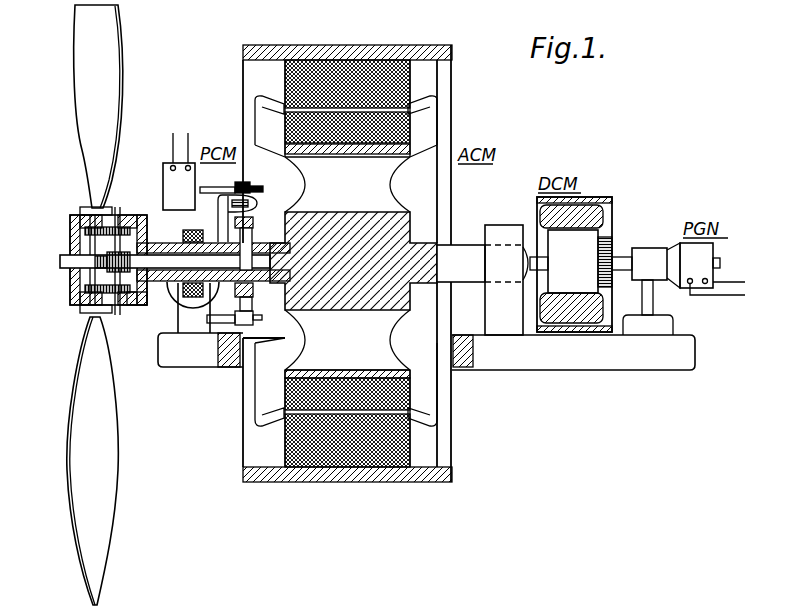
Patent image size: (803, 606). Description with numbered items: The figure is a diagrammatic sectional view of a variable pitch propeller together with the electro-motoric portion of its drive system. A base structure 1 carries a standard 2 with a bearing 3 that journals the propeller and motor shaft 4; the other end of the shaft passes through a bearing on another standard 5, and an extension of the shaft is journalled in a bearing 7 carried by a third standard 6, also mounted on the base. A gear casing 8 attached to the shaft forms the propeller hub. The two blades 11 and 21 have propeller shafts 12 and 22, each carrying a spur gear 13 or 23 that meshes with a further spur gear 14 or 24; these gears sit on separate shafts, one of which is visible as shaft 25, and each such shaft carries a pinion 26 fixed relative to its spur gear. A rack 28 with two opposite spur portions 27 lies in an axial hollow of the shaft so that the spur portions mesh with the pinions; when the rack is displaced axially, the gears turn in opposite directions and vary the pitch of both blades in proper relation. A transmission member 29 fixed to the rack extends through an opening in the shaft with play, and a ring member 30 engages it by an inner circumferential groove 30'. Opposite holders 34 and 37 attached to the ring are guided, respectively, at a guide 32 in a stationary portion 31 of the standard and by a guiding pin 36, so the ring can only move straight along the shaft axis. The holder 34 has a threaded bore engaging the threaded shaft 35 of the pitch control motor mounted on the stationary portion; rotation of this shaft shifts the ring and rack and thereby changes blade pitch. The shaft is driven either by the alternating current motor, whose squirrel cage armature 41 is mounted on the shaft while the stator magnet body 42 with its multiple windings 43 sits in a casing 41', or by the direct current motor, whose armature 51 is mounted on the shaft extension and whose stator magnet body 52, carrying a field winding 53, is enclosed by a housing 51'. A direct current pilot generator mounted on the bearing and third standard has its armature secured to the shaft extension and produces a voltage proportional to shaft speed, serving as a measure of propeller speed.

The base structure 1 is at (541, 358).
The standard 2 is at (182, 323).
The bearing 3 is at (190, 232).
The propeller and motor shaft 4 is at (457, 250).
The standard 5 is at (490, 306).
The third standard 6 is at (646, 297).
The bearing 7 is at (645, 254).
The gear casing 8 is at (155, 262).
The propeller blade 11 is at (80, 71).
The propeller shaft 12 is at (76, 222).
The spur gear 13 is at (73, 240).
The spur gear 14 is at (137, 218).
The propeller blade 21 is at (84, 402).
The propeller shaft 22 is at (80, 309).
The spur gear 23 is at (72, 290).
The spur gear 24 is at (126, 305).
The shaft 25 is at (142, 288).
The pinion 26 is at (108, 274).
The spur portions 27 is at (106, 256).
The rack 28 is at (164, 262).
The transmission member 29 is at (253, 237).
The ring member 30 is at (260, 219).
The inner circumferential groove 30' is at (261, 296).
The stationary portion 31 is at (226, 188).
The guide 32 is at (257, 204).
The holder 34 is at (244, 186).
The threaded shaft 35 is at (258, 188).
The guiding pin 36 is at (256, 318).
The holder 37 is at (233, 315).
The armature 41 is at (353, 263).
The casing 41' is at (347, 276).
The magnet body 42 is at (411, 80).
The windings 43 is at (273, 97).
The armature 51 is at (593, 252).
The housing 51' is at (583, 248).
The magnet body 52 is at (606, 200).
The field winding 53 is at (539, 212).